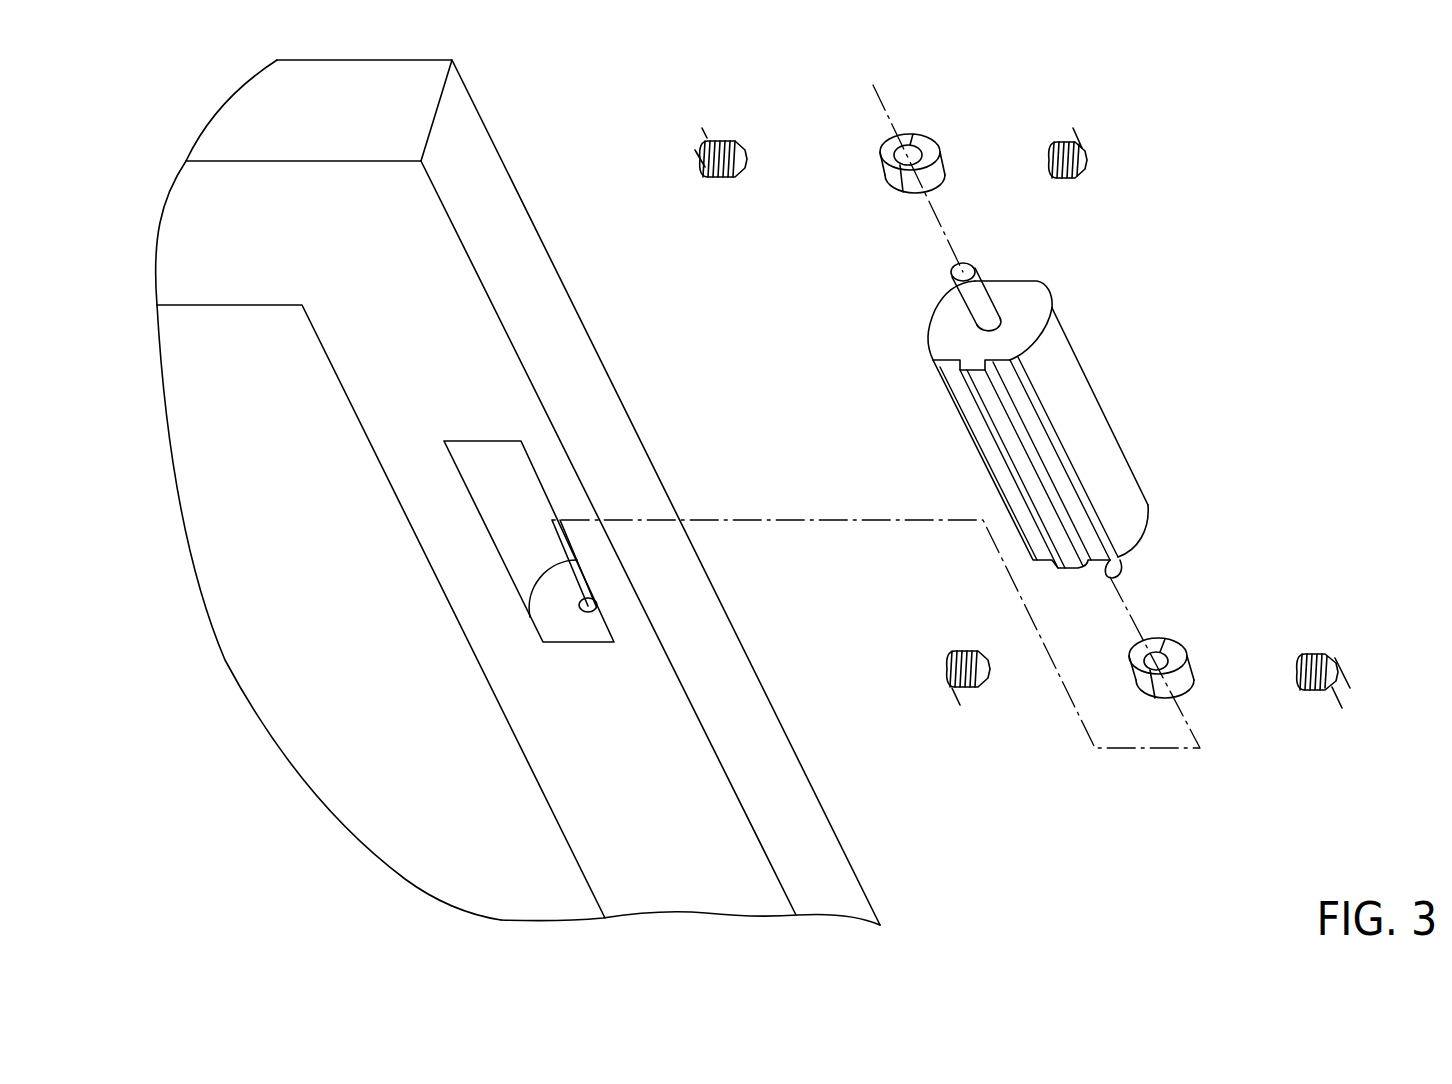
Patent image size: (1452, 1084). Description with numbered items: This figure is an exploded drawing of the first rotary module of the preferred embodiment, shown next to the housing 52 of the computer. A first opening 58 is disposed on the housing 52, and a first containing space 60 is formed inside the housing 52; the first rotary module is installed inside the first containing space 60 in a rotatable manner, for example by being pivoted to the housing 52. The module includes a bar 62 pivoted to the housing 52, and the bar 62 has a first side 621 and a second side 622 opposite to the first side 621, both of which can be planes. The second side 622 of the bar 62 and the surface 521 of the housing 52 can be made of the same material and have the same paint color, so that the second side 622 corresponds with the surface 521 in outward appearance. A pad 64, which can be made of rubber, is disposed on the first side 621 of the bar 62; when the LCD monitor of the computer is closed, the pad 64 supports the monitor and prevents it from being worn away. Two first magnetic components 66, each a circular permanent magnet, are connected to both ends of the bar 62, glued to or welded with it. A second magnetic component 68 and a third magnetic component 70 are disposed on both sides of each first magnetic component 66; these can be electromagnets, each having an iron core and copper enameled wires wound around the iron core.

The housing 52 is at (495, 147).
The surface 521 is at (430, 248).
The first opening 58 is at (547, 495).
The first containing space 60 is at (498, 470).
The bar 62 is at (1093, 401).
The first side 621 is at (1012, 379).
The second side 622 is at (1015, 280).
The pad 64 is at (1003, 433).
The first magnetic component 66 is at (934, 152).
The second magnetic component 68 is at (745, 150).
The third magnetic component 70 is at (1078, 148).